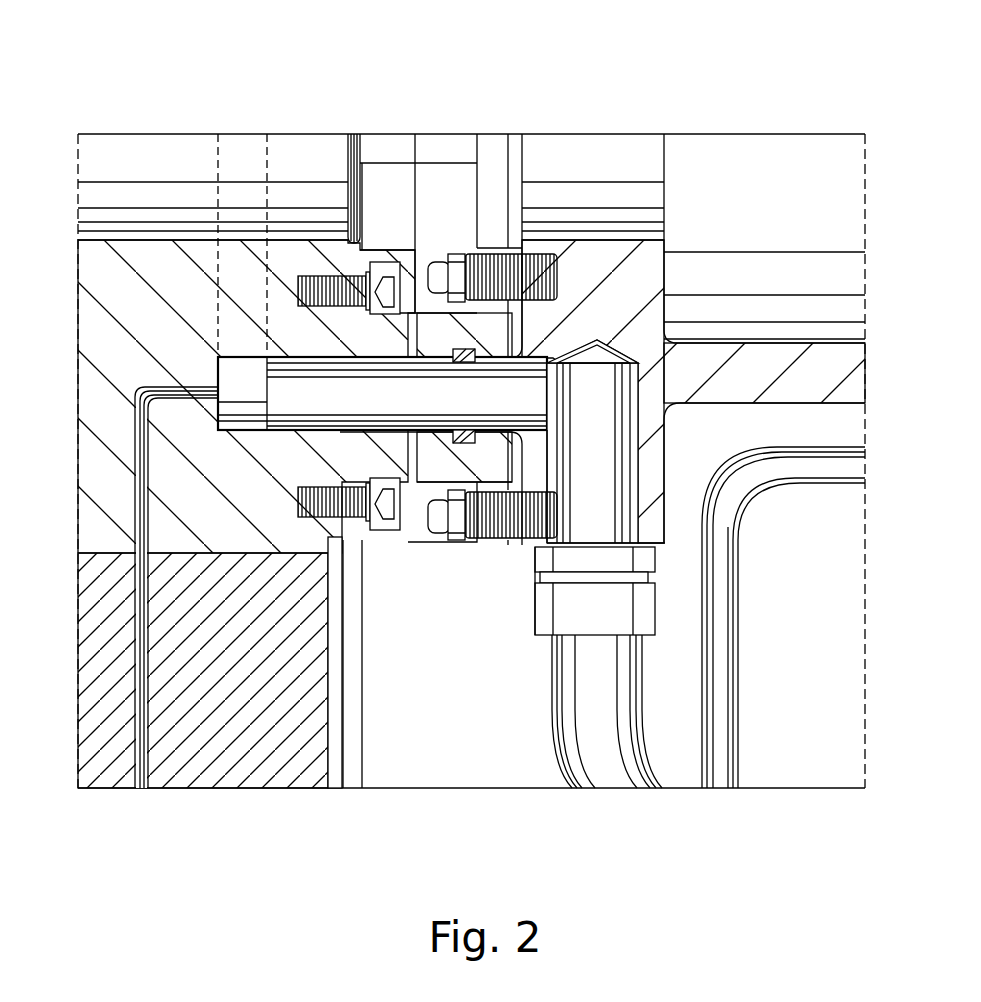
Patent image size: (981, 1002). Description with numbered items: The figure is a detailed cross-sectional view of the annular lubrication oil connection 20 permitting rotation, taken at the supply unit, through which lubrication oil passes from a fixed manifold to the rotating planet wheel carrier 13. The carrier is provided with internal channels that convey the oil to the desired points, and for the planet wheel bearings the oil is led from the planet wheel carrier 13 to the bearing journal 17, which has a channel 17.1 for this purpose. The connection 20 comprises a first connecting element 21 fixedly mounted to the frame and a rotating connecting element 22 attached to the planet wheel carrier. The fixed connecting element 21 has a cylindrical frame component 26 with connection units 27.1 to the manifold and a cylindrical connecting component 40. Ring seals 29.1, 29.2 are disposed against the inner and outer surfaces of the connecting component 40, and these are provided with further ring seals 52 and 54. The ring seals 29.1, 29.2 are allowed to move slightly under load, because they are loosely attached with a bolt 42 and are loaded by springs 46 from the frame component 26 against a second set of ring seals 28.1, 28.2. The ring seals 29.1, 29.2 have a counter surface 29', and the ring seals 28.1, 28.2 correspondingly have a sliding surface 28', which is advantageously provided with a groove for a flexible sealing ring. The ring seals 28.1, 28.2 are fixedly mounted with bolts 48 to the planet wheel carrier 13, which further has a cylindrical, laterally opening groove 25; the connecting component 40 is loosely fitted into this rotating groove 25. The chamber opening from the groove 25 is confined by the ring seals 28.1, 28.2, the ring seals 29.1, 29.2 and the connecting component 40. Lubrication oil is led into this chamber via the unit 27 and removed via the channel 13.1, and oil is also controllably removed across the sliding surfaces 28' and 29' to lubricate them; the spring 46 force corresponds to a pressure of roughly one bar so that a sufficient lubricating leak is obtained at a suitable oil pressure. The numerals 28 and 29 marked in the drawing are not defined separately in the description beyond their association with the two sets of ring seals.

The planet wheel carrier 13 is at (240, 482).
The channel 13.1 is at (140, 493).
The bearing journal 17 is at (213, 668).
The channel 17.1 is at (142, 722).
The connection 20 is at (444, 120).
The first connecting element 21 is at (494, 566).
The rotating connecting element 22 is at (372, 640).
The groove 25 is at (243, 357).
The frame component 26 is at (752, 385).
The unit 27 is at (287, 405).
The connection units 27.1 is at (575, 488).
The fastening screw 28 is at (333, 253).
The sliding surface 28' is at (404, 281).
The ring seal 28.1 is at (350, 351).
The ring seal 28.2 is at (350, 473).
The threaded stud 29 is at (665, 497).
The counter surface 29' is at (417, 568).
The ring seal 29.1 is at (440, 344).
The ring seal 29.2 is at (440, 475).
The cylindrical connecting component 40 is at (300, 362).
The bolt 42 is at (535, 320).
The spring 46 is at (518, 248).
The bolt 48 is at (392, 503).
The ring seal 52 is at (573, 367).
The ring seal 54 is at (487, 412).